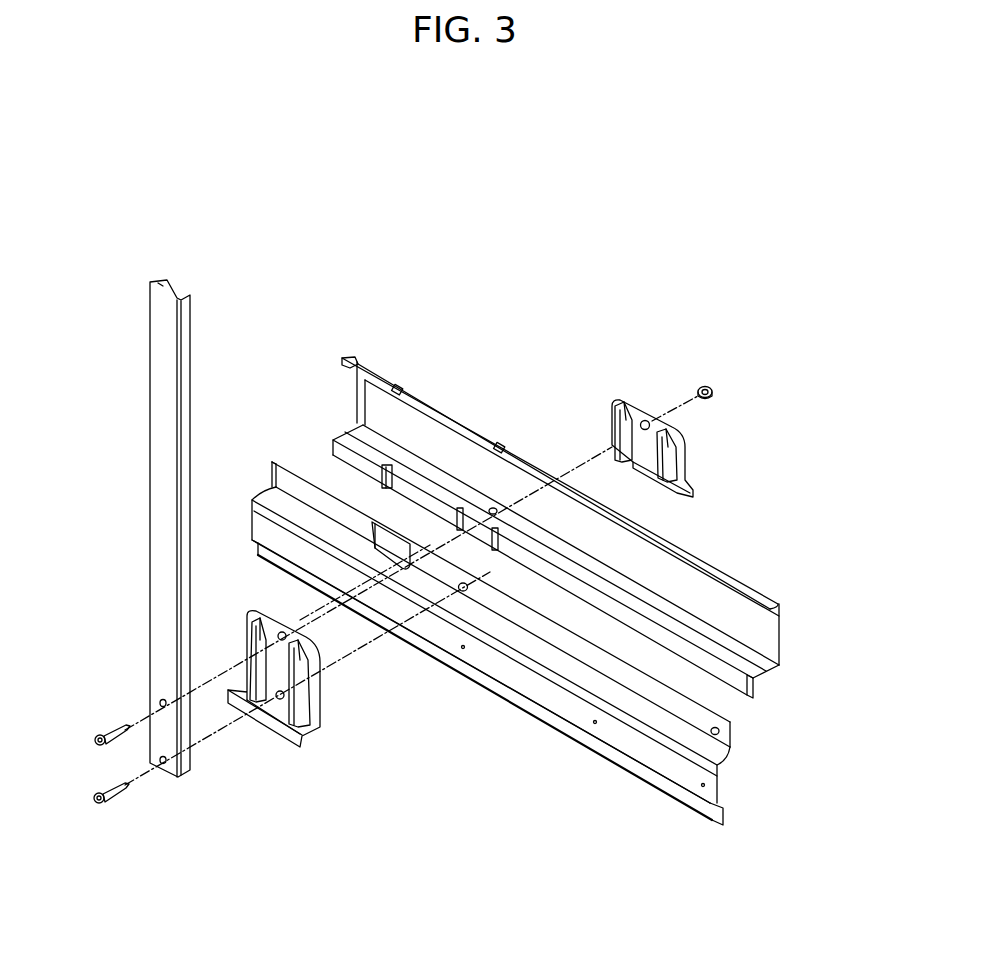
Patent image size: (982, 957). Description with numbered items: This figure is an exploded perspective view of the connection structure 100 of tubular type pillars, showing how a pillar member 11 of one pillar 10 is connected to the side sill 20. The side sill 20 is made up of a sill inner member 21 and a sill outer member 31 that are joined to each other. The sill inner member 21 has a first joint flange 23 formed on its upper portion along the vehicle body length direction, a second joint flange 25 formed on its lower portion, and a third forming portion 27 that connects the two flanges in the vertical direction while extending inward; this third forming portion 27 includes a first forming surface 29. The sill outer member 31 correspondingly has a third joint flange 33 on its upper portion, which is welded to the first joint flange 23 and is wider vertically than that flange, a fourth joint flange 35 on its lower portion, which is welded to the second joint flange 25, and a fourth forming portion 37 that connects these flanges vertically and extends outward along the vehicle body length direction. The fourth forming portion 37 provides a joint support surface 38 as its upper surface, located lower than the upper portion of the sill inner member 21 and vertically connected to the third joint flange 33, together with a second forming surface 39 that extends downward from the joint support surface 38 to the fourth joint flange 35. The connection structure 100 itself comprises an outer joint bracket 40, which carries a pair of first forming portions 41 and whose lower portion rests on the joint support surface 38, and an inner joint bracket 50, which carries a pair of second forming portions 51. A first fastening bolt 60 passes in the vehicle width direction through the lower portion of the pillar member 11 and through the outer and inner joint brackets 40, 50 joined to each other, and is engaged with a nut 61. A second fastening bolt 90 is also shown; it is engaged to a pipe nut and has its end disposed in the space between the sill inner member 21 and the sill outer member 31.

The connection structure of tubular type pillars 100 is at (455, 229).
The pillar 10 is at (197, 320).
The pillar member 11 is at (160, 650).
The side sill 20 is at (313, 316).
The sill inner member 21 is at (572, 523).
The first joint flange 23 is at (730, 585).
The second joint flange 25 is at (738, 687).
The third forming portion 27 is at (765, 625).
The first forming surface 29 is at (769, 640).
The sill outer member 31 is at (525, 602).
The third joint flange 33 is at (724, 738).
The fourth joint flange 35 is at (715, 815).
The fourth forming portion 37 is at (524, 645).
The joint support surface 38 is at (650, 717).
The second forming surface 39 is at (707, 792).
The outer joint bracket 40 is at (287, 702).
The first forming portion 41 is at (255, 672).
The inner joint bracket 50 is at (644, 414).
The second forming portion 51 is at (615, 440).
The first fastening bolt 60 is at (104, 722).
The nut 61 is at (710, 385).
The second fastening bolt 90 is at (113, 802).